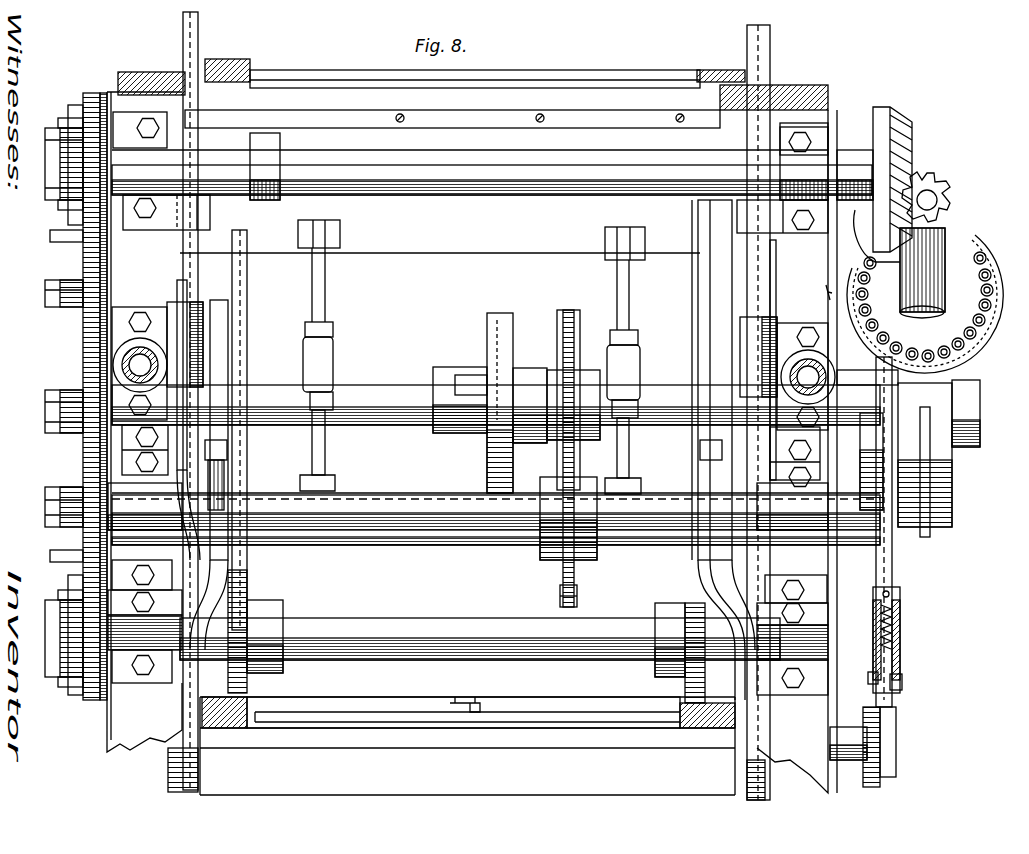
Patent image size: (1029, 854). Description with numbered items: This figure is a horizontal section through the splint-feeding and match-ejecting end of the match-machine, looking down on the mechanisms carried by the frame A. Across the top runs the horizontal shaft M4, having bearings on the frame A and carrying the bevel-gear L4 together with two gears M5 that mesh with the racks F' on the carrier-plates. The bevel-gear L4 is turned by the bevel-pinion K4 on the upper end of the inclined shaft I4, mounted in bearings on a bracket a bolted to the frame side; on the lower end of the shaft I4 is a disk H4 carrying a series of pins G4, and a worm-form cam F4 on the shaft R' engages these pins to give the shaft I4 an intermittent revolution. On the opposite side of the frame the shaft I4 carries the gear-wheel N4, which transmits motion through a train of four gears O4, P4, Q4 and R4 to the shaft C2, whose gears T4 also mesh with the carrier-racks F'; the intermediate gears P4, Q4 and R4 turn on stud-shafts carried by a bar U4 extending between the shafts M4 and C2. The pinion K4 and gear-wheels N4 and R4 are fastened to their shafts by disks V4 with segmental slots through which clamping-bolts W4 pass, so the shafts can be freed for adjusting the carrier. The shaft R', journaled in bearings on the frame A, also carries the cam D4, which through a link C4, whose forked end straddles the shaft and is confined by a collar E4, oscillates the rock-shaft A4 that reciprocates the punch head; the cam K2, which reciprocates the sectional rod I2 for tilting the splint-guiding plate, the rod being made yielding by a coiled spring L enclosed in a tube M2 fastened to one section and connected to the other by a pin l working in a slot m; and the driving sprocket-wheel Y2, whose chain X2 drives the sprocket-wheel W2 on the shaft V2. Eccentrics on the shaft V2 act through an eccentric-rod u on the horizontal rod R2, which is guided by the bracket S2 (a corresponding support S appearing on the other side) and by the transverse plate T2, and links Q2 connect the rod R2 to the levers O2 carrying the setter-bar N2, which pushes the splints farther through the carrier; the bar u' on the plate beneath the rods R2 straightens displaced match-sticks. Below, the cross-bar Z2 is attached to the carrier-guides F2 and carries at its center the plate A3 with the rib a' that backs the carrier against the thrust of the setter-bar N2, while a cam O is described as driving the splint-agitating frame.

The frame A is at (472, 442).
The gear-wheel N4 is at (93, 93).
The clamping-bolts W4 is at (62, 130).
The disk V4 is at (72, 112).
The gear O4 is at (83, 253).
The bar U4 is at (112, 304).
The intermediate gear P4 is at (82, 382).
The intermediate gear Q4 is at (82, 477).
The gear R4 is at (83, 556).
The transverse plate T2 is at (153, 78).
The carrier-plate rack F' is at (475, 67).
The bar u' is at (452, 118).
The horizontal shaft M4 is at (530, 185).
The gear M5 is at (255, 172).
The bracket a is at (855, 151).
The link Q2 is at (247, 372).
The cam O is at (172, 767).
The lever O2 is at (765, 780).
The eccentric-rod u is at (209, 475).
The slide block S is at (185, 344).
The bracket S2 is at (773, 325).
The rib a' is at (631, 515).
The horizontal rod R2 is at (180, 268).
The link C4 is at (472, 473).
The collar E4 is at (448, 375).
The cam D4 is at (502, 320).
The driving sprocket-wheel Y2 is at (585, 335).
The driving-chain X2 is at (580, 598).
The sprocket-wheel W2 is at (558, 585).
The shaft R' is at (482, 357).
The rock-shaft A4 is at (365, 542).
The shaft V2 is at (380, 502).
The shaft C2 is at (466, 625).
The gear T4 is at (248, 590).
The setter-bar N2 is at (467, 746).
The carrier-guide F2 is at (247, 700).
The horizontal cross-bar Z2 is at (410, 697).
The plate A3 is at (492, 705).
The bevel-gear L4 is at (908, 170).
The bevel-pinion K4 is at (958, 216).
The pins G4 is at (975, 350).
The disk H4 is at (924, 307).
The shaft I4 is at (946, 286).
The worm-form cam F4 is at (950, 488).
The cam K2 is at (875, 510).
The rod I2 is at (896, 578).
The tube M2 is at (902, 604).
The coiled spring L is at (900, 636).
The slot m is at (868, 680).
The pin l is at (900, 682).